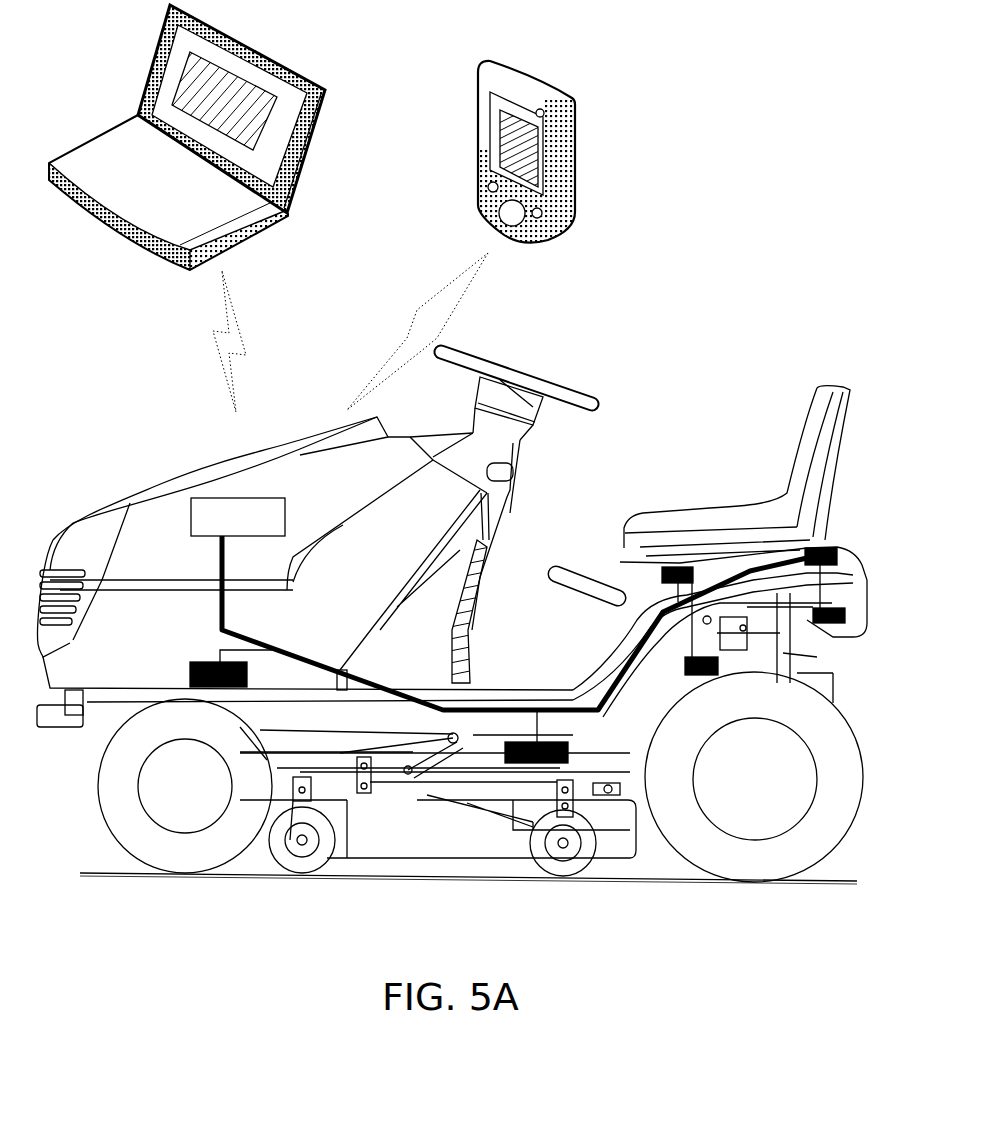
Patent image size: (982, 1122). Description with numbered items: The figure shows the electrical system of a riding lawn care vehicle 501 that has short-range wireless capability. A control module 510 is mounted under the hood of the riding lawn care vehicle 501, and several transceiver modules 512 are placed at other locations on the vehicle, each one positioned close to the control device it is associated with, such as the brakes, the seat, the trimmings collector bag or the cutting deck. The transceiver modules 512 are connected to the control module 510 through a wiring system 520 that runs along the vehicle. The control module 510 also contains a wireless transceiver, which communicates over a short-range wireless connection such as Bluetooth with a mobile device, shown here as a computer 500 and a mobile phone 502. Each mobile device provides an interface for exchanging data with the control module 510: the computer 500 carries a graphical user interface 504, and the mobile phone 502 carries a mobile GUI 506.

The computer 500 is at (212, 137).
The graphical user interface 504 is at (260, 111).
The mobile phone 502 is at (558, 138).
The mobile GUI 506 is at (567, 156).
The riding lawn care vehicle 501 is at (471, 593).
The control module 510 is at (266, 503).
The transceiver modules 512 is at (519, 649).
The wiring system 520 is at (514, 623).